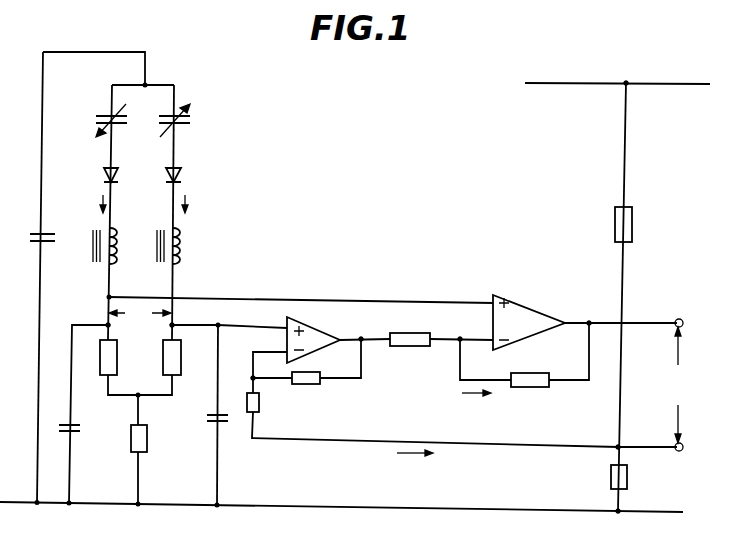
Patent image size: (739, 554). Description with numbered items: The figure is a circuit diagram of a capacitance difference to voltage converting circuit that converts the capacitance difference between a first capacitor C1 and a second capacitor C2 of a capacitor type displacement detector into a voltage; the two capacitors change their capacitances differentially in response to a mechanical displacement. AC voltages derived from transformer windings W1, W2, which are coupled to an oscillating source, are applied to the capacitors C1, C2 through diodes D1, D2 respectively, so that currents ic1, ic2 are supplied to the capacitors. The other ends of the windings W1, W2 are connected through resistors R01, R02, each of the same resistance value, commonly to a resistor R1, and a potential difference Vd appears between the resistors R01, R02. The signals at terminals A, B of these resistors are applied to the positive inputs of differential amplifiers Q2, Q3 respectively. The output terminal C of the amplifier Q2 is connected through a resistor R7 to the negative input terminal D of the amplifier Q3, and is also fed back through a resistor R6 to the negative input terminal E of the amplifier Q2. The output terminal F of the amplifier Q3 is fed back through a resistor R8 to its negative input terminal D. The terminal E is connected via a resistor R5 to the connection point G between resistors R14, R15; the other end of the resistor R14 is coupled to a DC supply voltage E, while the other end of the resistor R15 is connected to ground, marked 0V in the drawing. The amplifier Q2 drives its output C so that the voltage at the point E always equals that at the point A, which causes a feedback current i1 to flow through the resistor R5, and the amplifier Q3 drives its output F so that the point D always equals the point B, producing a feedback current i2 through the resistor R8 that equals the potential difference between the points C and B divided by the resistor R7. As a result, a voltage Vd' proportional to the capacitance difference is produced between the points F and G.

The first capacitor C1 is at (184, 114).
The second capacitor C2 is at (110, 114).
The diode D1 is at (181, 172).
The diode D2 is at (106, 172).
The transformer winding W1 is at (181, 248).
The transformer winding W2 is at (115, 238).
The current ic1 is at (207, 198).
The current ic2 is at (101, 197).
The resistor R01 is at (175, 362).
The resistor R02 is at (104, 362).
The resistor R1 is at (147, 441).
The resistor R5 is at (259, 403).
The resistor R6 is at (307, 384).
The resistor R7 is at (410, 333).
The resistor R8 is at (527, 388).
The resistor R14 is at (632, 226).
The resistor R15 is at (627, 477).
The differential amplifier Q2 is at (313, 325).
The differential amplifier Q3 is at (521, 308).
The terminal A is at (174, 322).
The terminal B is at (107, 322).
The output terminal C is at (361, 322).
The negative side input terminal D is at (461, 324).
The negative side input terminal E is at (432, 221).
The output terminal F is at (598, 312).
The connection point G is at (618, 446).
The potential difference Vd is at (140, 314).
The voltage Vd' is at (681, 385).
The feedback current i1 is at (415, 468).
The feedback current i2 is at (476, 409).
The ground reference 0V is at (657, 530).